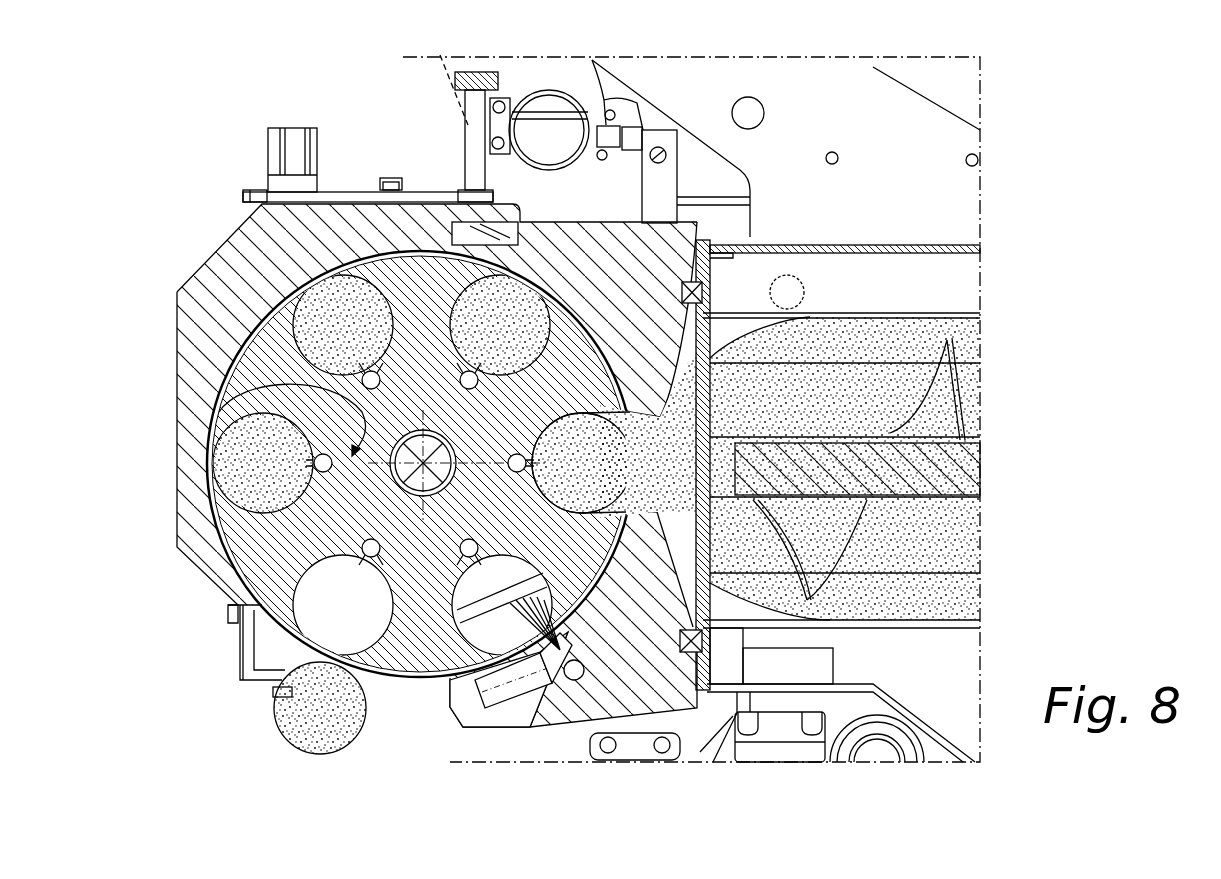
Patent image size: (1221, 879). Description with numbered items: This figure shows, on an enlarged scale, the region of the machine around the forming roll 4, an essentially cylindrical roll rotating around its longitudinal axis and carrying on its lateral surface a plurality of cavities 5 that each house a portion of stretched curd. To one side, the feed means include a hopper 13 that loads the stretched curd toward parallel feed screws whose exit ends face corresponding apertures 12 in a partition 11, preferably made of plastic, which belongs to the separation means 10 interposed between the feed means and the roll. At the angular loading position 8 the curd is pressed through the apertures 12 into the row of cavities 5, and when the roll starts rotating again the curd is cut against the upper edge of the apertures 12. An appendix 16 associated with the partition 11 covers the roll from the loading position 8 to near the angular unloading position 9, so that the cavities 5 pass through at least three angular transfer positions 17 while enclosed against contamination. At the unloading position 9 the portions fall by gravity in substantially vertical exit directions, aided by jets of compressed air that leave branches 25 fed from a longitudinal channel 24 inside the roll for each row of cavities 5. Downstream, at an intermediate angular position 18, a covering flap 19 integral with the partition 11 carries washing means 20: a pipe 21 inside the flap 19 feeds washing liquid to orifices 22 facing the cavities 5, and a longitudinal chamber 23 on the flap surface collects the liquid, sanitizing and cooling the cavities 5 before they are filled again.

The forming roll 4 is at (258, 565).
The cavities 5 is at (587, 300).
The angular loading position 8 is at (610, 525).
The angular unloading position 9 is at (373, 686).
The separation means 10 is at (673, 714).
The partition 11 is at (652, 610).
The apertures 12 is at (657, 418).
The hopper 13 is at (933, 400).
The appendix 16 is at (212, 272).
The angular transfer positions 17 is at (352, 252).
The intermediate angular position 18 is at (458, 678).
The covering flap 19 is at (532, 730).
The washing means 20 is at (505, 716).
The pipe 21 is at (572, 681).
The orifices 22 is at (583, 653).
The longitudinal chamber 23 is at (470, 723).
The longitudinal channel 24 is at (383, 373).
The branches 25 is at (484, 374).